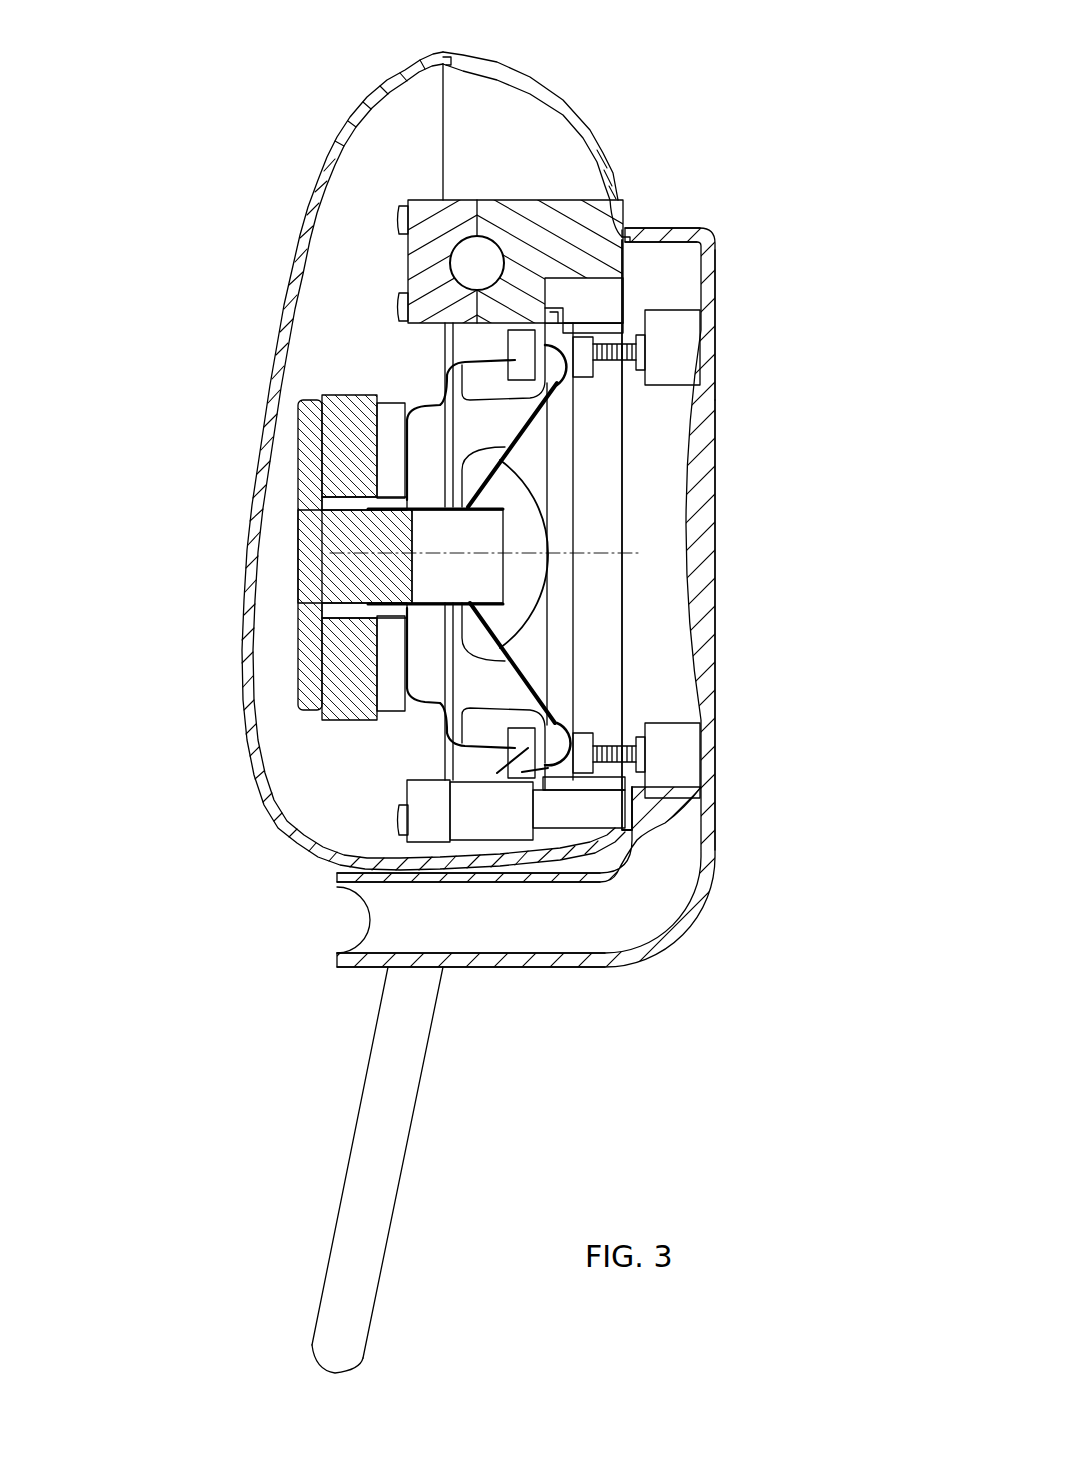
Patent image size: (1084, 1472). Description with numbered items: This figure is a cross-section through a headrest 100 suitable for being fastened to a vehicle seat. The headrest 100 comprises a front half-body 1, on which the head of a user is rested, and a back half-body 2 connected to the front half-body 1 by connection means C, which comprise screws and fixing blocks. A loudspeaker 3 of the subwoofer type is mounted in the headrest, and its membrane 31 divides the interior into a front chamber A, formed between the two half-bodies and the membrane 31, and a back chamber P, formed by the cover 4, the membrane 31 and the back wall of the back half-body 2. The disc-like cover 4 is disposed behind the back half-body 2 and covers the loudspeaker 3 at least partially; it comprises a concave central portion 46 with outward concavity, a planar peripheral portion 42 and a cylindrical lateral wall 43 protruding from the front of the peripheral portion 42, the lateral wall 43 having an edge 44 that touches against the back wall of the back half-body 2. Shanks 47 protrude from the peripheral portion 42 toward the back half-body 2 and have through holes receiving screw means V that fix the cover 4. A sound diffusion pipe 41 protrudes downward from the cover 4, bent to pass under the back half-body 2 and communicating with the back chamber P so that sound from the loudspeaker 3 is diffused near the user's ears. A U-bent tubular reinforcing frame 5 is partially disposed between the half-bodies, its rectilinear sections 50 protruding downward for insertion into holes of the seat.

The headrest 100 is at (603, 80).
The front half-body 1 is at (306, 237).
The back half-body 2 is at (593, 148).
The loudspeaker 3 is at (476, 560).
The cover 4 is at (591, 674).
The reinforcing frame 5 is at (393, 1170).
The membrane 31 is at (505, 678).
The sound diffusion pipe 41 is at (485, 967).
The planar peripheral portion 42 is at (710, 340).
The cylindrical lateral wall 43 is at (690, 232).
The edge 44 is at (623, 202).
The concave central portion 46 is at (697, 540).
The shanks 47 is at (675, 362).
The rectilinear sections 50 is at (363, 1253).
The front chamber A is at (387, 197).
The connection means C is at (488, 197).
The back chamber P is at (688, 272).
The screw means V is at (612, 360).